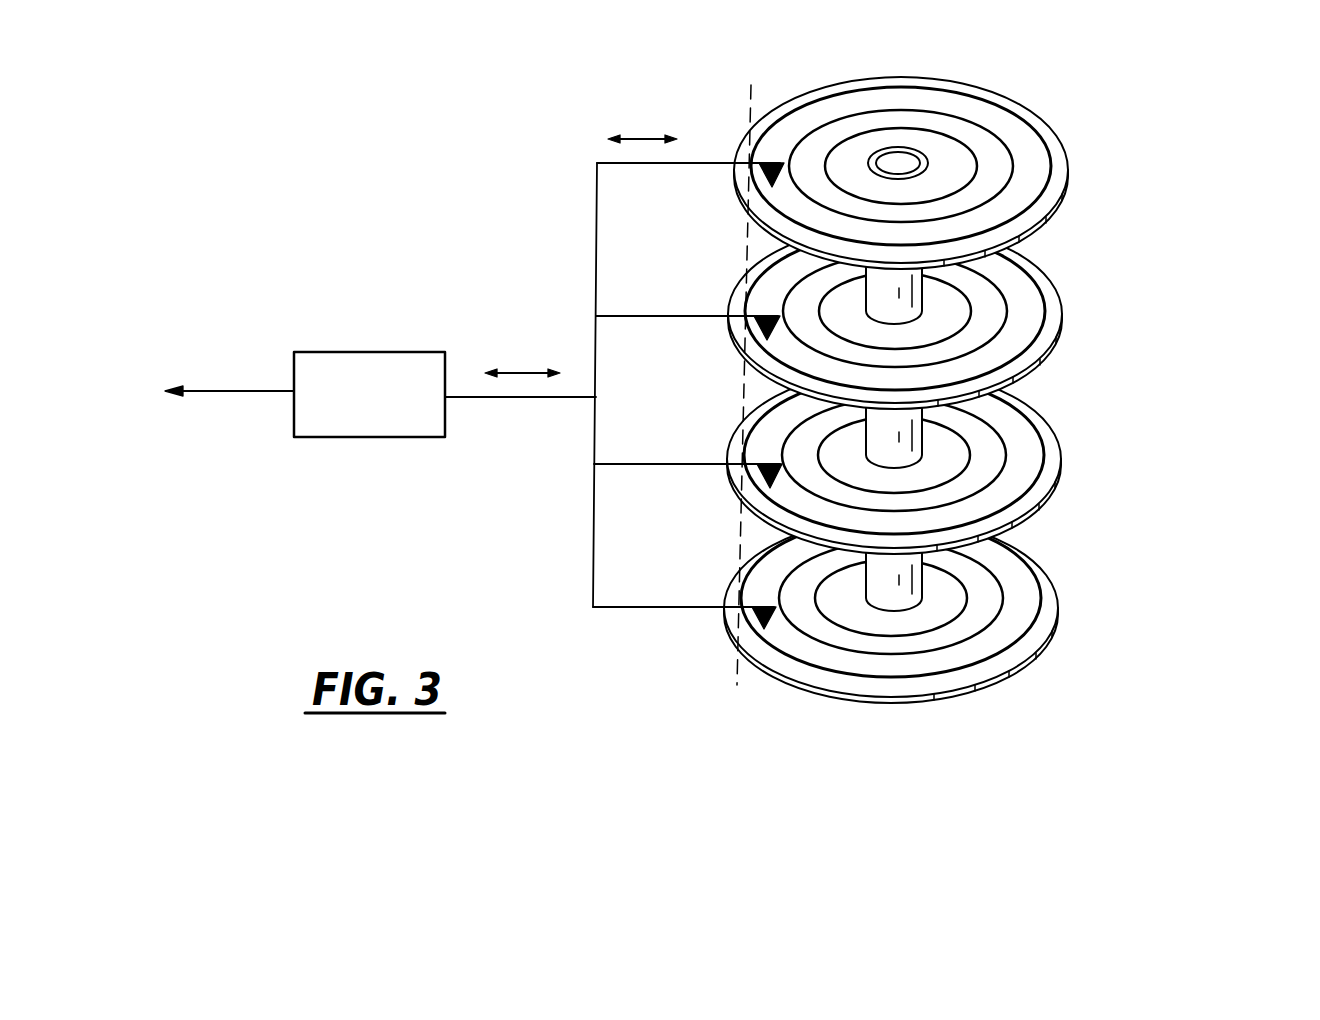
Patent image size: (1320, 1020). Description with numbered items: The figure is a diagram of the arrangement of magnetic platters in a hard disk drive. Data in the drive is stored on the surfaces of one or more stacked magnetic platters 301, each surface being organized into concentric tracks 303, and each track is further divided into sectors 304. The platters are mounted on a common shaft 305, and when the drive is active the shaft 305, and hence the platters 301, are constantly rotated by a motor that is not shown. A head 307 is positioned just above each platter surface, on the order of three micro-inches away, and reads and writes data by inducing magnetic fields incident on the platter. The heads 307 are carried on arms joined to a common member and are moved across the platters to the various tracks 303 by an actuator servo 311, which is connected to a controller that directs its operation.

The magnetic platter 301 is at (1200, 637).
The track 303 is at (1007, 473).
The sector 304 is at (965, 128).
The shaft 305 is at (915, 295).
The head 307 is at (749, 144).
The actuator servo 311 is at (372, 352).